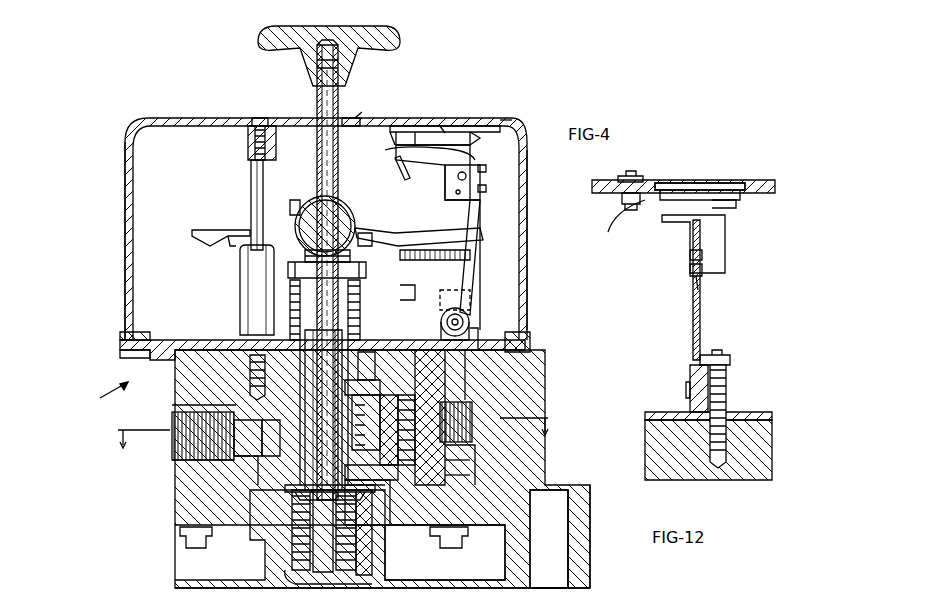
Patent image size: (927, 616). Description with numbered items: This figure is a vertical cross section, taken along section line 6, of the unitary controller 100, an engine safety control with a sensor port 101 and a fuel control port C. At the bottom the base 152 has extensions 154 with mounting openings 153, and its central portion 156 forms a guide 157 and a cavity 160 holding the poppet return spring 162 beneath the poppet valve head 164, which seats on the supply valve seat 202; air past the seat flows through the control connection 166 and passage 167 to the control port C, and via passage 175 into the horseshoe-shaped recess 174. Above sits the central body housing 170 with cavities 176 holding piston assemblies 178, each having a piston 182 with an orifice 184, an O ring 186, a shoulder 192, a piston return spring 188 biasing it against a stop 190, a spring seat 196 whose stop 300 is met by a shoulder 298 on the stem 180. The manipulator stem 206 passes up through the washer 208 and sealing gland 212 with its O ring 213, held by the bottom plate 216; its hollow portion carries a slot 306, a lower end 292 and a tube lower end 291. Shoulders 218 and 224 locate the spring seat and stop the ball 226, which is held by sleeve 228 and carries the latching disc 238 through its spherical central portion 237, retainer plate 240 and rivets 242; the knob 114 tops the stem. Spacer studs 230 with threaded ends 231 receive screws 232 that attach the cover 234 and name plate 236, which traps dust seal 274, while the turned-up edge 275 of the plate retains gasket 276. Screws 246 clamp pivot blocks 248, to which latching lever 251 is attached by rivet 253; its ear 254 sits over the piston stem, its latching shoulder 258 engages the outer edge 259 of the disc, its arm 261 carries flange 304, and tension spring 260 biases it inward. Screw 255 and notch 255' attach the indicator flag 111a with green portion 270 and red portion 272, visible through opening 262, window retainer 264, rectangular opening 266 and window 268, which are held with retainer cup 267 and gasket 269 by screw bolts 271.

In FIG. 4, the unitary controller 100 is at (96, 398).
In FIG. 4, the control fluid discharge sensor port 101 is at (472, 418).
In FIG. 4, the indicator flag 111a is at (390, 158).
In FIG. 4, the knob or push button 114 is at (385, 30).
In FIG. 4, the base 152 is at (540, 492).
In FIG. 4, the opening 153 is at (576, 516).
In FIG. 4, the extension 154 is at (590, 496).
In FIG. 4, the central portion 156 is at (316, 572).
In FIG. 4, the guide 157 is at (386, 584).
In FIG. 4, the cavity 160 is at (360, 576).
In FIG. 4, the poppet return spring 162 is at (292, 560).
In FIG. 4, the poppet valve head 164 is at (290, 496).
In FIG. 4, the control connection 166 is at (286, 416).
In FIG. 4, the passage 167 is at (230, 430).
In FIG. 4, the central body housing 170 is at (176, 372).
In FIG. 12, the central body housing 170 is at (746, 472).
In FIG. 4, the horseshoe-shaped recess 174 is at (218, 494).
In FIG. 4, the passage 175 is at (234, 466).
In FIG. 4, the cavity 176 is at (386, 434).
In FIG. 4, the piston assembly 178 is at (462, 452).
In FIG. 4, the stem 180 is at (454, 360).
In FIG. 4, the piston 182 is at (466, 464).
In FIG. 4, the orifice 184 is at (380, 464).
In FIG. 4, the O ring 186 is at (466, 480).
In FIG. 4, the piston return spring 188 is at (392, 416).
In FIG. 4, the stop 190 is at (430, 538).
In FIG. 4, the shoulder 192 is at (380, 512).
In FIG. 4, the spring seat 196 is at (398, 404).
In FIG. 4, the supply valve seat 202 is at (262, 440).
In FIG. 4, the manipulator stem or shaft assembly 206 is at (318, 170).
In FIG. 4, the washer 208 is at (385, 386).
In FIG. 4, the sealing gland 212 is at (362, 336).
In FIG. 4, the O ring 213 is at (383, 362).
In FIG. 4, the bottom plate 216 is at (178, 340).
In FIG. 12, the bottom plate 216 is at (748, 408).
In FIG. 4, the shoulder 218 is at (367, 270).
In FIG. 4, the second shoulder 224 is at (352, 256).
In FIG. 4, the ball 226 is at (385, 204).
In FIG. 4, the sleeve 228 is at (293, 152).
In FIG. 4, the spacer stud 230 is at (244, 300).
In FIG. 4, the opposite end of spacer stud 231 is at (252, 186).
In FIG. 4, the screw 232 is at (262, 116).
In FIG. 4, the cover 234 is at (140, 215).
In FIG. 12, the cover 234 is at (730, 218).
In FIG. 4, the name plate 236 is at (232, 120).
In FIG. 12, the name plate 236 is at (748, 182).
In FIG. 4, the central portion 237 is at (305, 210).
In FIG. 4, the latching disc 238 is at (228, 242).
In FIG. 4, the retainer plate 240 is at (395, 230).
In FIG. 4, the rivet 242 is at (370, 250).
In FIG. 4, the screw 246 is at (478, 280).
In FIG. 12, the screw 246 is at (714, 350).
In FIG. 4, the pivot block 248 is at (470, 332).
In FIG. 12, the pivot block 248 is at (732, 360).
In FIG. 4, the latching lever 251 is at (505, 192).
In FIG. 4, the rivet 253 is at (466, 320).
In FIG. 12, the rivet 253 is at (688, 392).
In FIG. 4, the ear or flange 254 is at (448, 262).
In FIG. 4, the screw 255 is at (527, 157).
In FIG. 12, the screw 255 is at (667, 263).
In FIG. 4, the notch 255' is at (529, 173).
In FIG. 12, the notch 255' is at (662, 284).
In FIG. 4, the latching shoulder 258 is at (526, 215).
In FIG. 12, the latching shoulder 258 is at (694, 290).
In FIG. 4, the outer edge 259 is at (482, 240).
In FIG. 4, the tension spring 260 is at (418, 282).
In FIG. 4, the arm 261 is at (398, 180).
In FIG. 4, the opening 262 is at (440, 128).
In FIG. 4, the window retainer 264 is at (396, 140).
In FIG. 4, the rectangular opening 266 is at (470, 126).
In FIG. 12, the rectangular opening 266 is at (736, 208).
In FIG. 12, the window retainer cup 267 is at (626, 222).
In FIG. 4, the window 268 is at (428, 135).
In FIG. 12, the window 268 is at (688, 192).
In FIG. 12, the gasket 269 is at (730, 182).
In FIG. 4, the green portion 270 is at (500, 122).
In FIG. 12, the screw bolt 271 is at (640, 176).
In FIG. 4, the red portion 272 is at (398, 132).
In FIG. 4, the dust seal 274 is at (352, 118).
In FIG. 4, the outer edge 275 is at (122, 350).
In FIG. 4, the gasket 276 is at (122, 336).
In FIG. 4, the lower end of tube 291 is at (340, 572).
In FIG. 4, the lower end of stem 292 is at (250, 410).
In FIG. 4, the shoulder 298 is at (470, 392).
In FIG. 4, the stop 300 is at (478, 382).
In FIG. 4, the flange 304 is at (472, 166).
In FIG. 4, the hole or slot 306 is at (325, 330).
In FIG. 4, the fuel control port C is at (172, 410).
In FIG. 4, the section line 6 is at (333, 421).